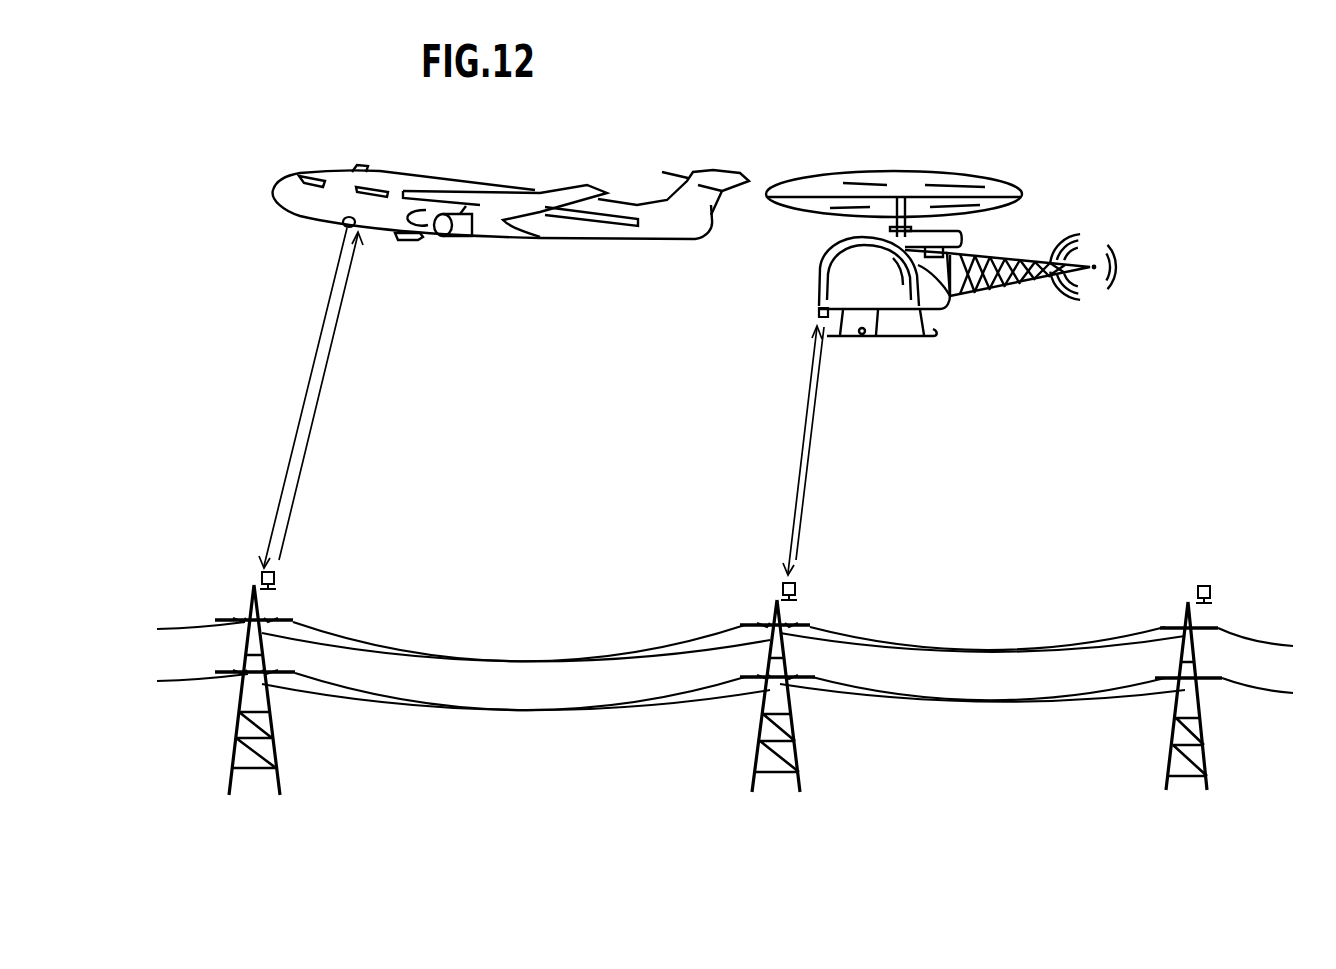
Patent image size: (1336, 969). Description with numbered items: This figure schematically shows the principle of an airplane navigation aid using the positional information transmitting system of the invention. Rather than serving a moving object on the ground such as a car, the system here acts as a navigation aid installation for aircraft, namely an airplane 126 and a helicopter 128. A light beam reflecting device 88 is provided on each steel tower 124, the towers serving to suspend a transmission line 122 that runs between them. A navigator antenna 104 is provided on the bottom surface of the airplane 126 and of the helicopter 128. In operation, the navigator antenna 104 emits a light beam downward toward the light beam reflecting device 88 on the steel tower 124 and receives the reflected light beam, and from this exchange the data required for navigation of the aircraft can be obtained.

The airplane 126 is at (483, 165).
The helicopter 128 is at (1036, 233).
The navigator antenna 104 is at (343, 227).
The light beam reflecting device 88 is at (276, 580).
The steel tower 124 is at (258, 594).
The transmission line 122 is at (1226, 630).